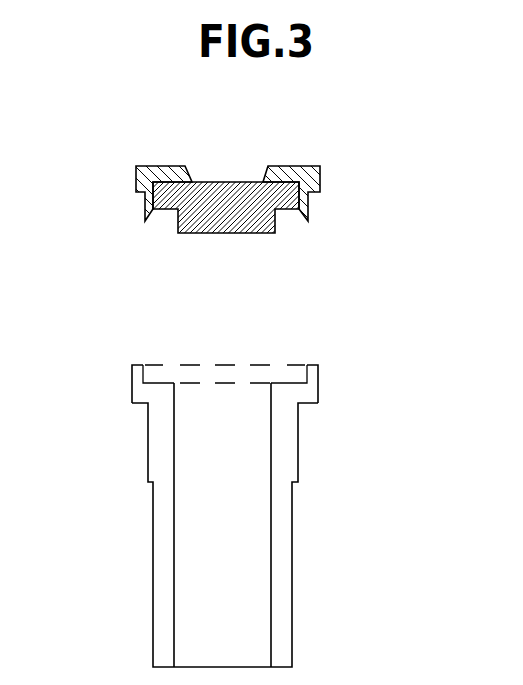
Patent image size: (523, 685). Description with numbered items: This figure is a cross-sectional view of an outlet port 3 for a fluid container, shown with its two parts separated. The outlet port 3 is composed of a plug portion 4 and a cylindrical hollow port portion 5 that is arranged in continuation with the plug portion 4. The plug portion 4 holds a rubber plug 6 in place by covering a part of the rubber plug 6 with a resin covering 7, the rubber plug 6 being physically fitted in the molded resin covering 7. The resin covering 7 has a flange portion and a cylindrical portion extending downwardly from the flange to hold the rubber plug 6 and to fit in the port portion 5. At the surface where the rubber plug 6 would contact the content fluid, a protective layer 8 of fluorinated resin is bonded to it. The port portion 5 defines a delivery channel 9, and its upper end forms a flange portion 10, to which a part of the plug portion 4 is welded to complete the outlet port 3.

The outlet port 3 is at (450, 85).
The plug portion 4 is at (339, 199).
The port portion 5 is at (338, 364).
The rubber plug 6 is at (235, 200).
The resin covering 7 is at (150, 179).
The protective layer 8 is at (230, 232).
The delivery channel 9 is at (227, 562).
The flange portion 10 is at (143, 382).